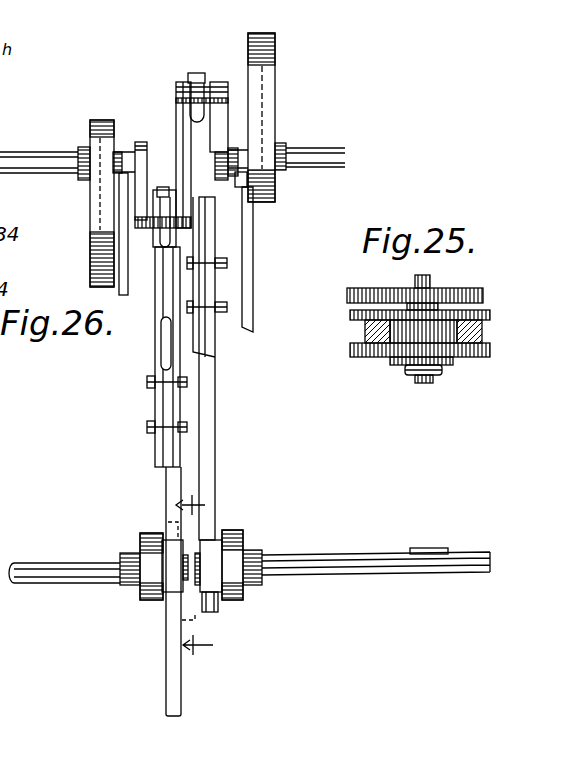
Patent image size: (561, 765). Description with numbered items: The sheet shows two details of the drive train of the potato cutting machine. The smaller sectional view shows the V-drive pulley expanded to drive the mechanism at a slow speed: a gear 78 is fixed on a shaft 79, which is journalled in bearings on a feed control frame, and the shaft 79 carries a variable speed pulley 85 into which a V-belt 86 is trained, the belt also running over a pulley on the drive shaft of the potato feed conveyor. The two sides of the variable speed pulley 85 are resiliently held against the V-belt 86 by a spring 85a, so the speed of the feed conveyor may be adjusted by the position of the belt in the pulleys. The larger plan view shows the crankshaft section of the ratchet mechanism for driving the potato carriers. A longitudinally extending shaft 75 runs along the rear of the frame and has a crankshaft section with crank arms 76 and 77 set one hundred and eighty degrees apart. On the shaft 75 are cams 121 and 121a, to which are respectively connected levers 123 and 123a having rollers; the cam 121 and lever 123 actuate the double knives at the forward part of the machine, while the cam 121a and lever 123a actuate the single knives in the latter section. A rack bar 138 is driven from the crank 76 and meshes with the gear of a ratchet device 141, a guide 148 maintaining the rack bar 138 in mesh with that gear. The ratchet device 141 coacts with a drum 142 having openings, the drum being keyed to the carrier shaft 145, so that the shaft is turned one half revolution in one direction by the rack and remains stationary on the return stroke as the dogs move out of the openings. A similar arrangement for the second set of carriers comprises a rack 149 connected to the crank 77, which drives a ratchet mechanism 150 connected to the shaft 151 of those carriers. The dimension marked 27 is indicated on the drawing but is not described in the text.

In FIG. 26, the longitudinally extending shaft 75 is at (37, 185).
In FIG. 26, the crank arm 76 is at (147, 172).
In FIG. 26, the crank arm 77 is at (222, 107).
In FIG. 26, the cam 121 is at (105, 222).
In FIG. 26, the cam 121a is at (260, 110).
In FIG. 26, the lever 123 is at (118, 295).
In FIG. 26, the lever 123a is at (253, 232).
In FIG. 26, the rack 149 is at (215, 432).
In FIG. 26, the rack bar 138 is at (160, 487).
In FIG. 26, the offset distance 27 is at (190, 572).
In FIG. 26, the carrier shaft 145 is at (50, 574).
In FIG. 26, the drum 142 is at (143, 544).
In FIG. 26, the ratchet device 141 is at (141, 611).
In FIG. 26, the guide 148 is at (165, 570).
In FIG. 26, the ratchet mechanism 150 is at (256, 543).
In FIG. 26, the shaft 151 is at (370, 562).
In FIG. 25, the gear 78 is at (455, 288).
In FIG. 25, the shaft 79 is at (415, 283).
In FIG. 25, the V-belt 86 is at (365, 330).
In FIG. 25, the variable speed pulley 85 is at (385, 358).
In FIG. 25, the spring 85a is at (433, 372).